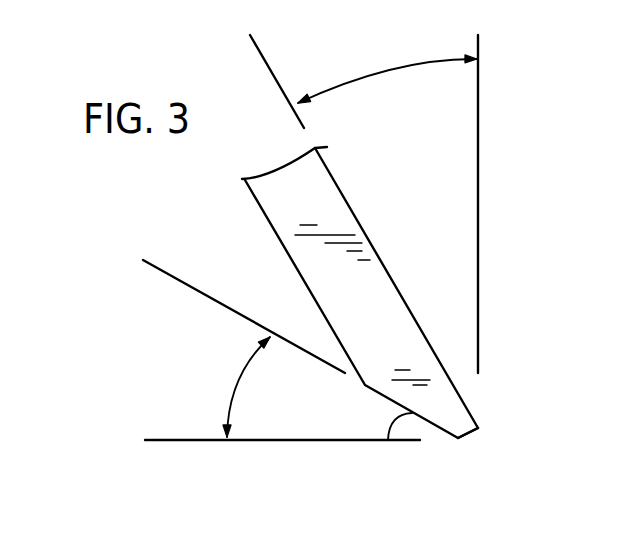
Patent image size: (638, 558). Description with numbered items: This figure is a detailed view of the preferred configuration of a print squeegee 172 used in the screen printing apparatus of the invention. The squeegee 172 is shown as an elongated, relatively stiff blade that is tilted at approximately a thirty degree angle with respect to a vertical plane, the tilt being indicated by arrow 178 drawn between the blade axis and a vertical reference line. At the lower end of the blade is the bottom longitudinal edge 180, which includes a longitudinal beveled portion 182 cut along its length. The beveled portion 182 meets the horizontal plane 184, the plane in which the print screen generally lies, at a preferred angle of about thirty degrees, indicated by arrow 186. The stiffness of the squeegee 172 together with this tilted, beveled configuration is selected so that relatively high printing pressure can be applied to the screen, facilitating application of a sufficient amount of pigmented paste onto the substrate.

The squeegee 172 is at (390, 297).
The arrow indicating tilt angle with respect to a vertical plane 178 is at (367, 77).
The bottom longitudinal edge 180 is at (458, 438).
The longitudinal beveled portion 182 is at (388, 440).
The horizontal plane 184 is at (177, 441).
The arrow indicating angle between beveled portion and horizontal plane 186 is at (238, 382).